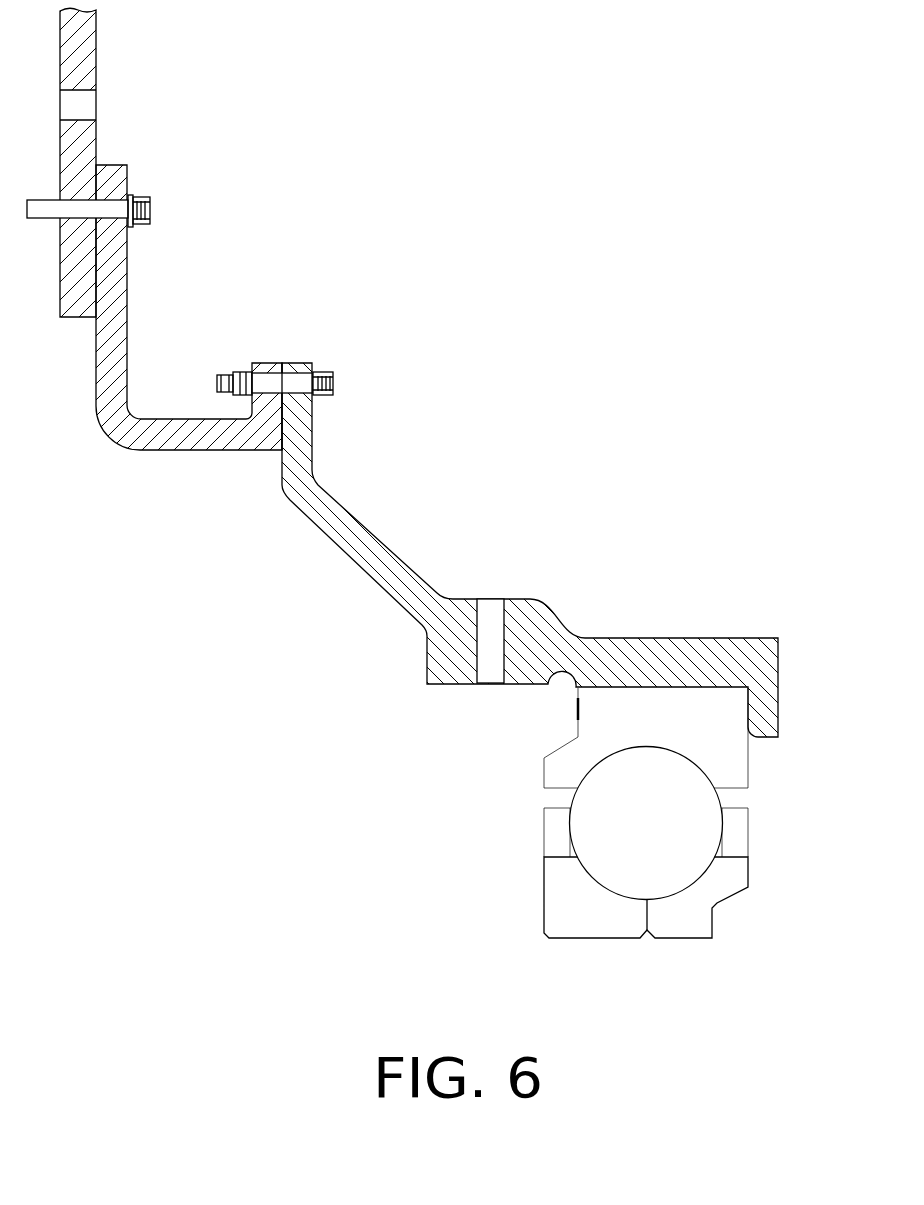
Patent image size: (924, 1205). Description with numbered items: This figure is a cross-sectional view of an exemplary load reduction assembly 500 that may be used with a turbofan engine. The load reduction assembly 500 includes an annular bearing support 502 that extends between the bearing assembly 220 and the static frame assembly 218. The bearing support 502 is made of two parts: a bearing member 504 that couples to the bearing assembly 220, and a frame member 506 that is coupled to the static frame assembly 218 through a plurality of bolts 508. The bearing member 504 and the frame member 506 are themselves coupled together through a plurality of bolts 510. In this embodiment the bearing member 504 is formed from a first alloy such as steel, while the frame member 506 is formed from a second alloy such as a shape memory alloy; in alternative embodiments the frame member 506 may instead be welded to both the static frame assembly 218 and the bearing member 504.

The load reduction assembly 500 is at (402, 473).
The annular bearing support 502 is at (437, 451).
The bearing member 504 is at (548, 612).
The frame member 506 is at (200, 452).
The bolts 508 is at (152, 210).
The bolts 510 is at (334, 385).
The static frame assembly 218 is at (87, 68).
The bearing assembly 220 is at (577, 915).